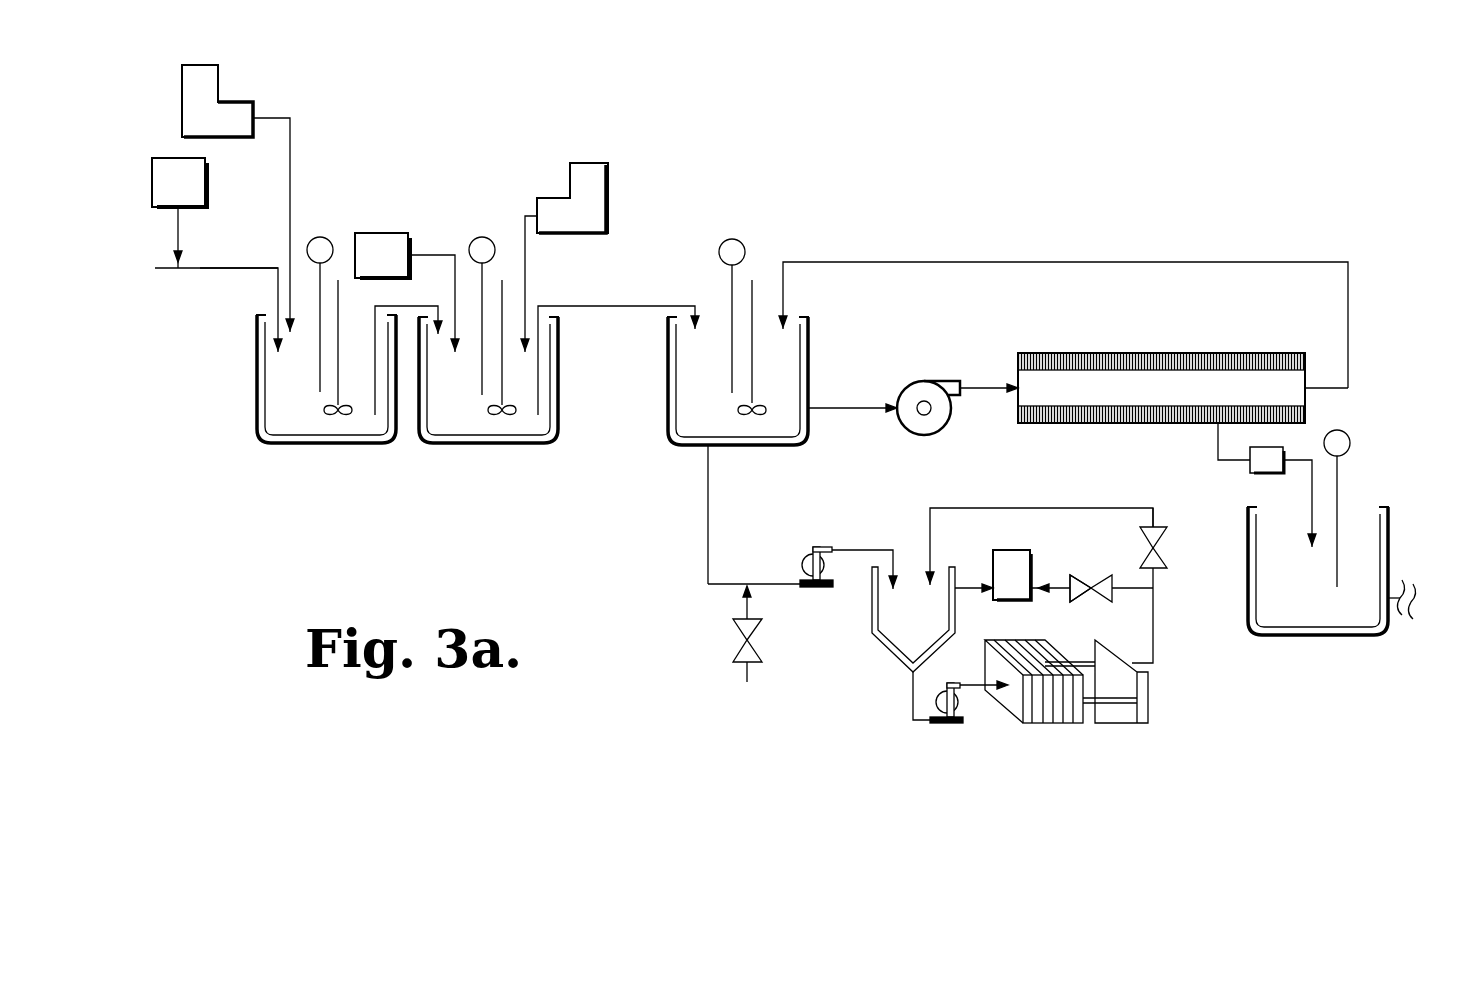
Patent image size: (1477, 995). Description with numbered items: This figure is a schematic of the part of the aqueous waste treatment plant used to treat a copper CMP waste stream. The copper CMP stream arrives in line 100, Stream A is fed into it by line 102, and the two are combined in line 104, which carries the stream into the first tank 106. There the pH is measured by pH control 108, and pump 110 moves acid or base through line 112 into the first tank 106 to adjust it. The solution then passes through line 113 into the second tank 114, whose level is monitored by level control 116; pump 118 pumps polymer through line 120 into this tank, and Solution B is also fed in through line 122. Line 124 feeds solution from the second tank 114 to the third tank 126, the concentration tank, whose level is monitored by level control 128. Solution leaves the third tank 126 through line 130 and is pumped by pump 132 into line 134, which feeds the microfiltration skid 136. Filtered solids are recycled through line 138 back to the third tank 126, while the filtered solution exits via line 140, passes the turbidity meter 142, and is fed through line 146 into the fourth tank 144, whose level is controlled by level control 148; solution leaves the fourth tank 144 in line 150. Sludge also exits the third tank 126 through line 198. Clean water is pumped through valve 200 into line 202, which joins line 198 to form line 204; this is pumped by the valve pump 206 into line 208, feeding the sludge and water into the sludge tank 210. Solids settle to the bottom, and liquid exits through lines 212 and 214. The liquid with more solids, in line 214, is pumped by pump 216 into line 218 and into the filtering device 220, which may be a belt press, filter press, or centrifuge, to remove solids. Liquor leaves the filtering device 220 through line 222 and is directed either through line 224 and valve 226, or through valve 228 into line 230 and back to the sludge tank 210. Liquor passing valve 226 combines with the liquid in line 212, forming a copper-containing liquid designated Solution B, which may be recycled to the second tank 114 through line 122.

The line 100 is at (168, 268).
The line 102 is at (176, 231).
The line 104 is at (225, 268).
The first tank 106 is at (258, 440).
The pH control 108 is at (318, 232).
The pump 110 is at (218, 82).
The line 112 is at (292, 140).
The line 113 is at (386, 306).
The second tank 114 is at (421, 442).
The level control 116 is at (484, 237).
The pump 118 is at (608, 198).
The line 120 is at (527, 275).
The line 122 is at (432, 250).
The line 124 is at (585, 306).
The third tank 126 is at (668, 440).
The level control 128 is at (742, 238).
The line 130 is at (828, 408).
The pump 132 is at (915, 435).
The line 134 is at (985, 388).
The microfiltration skid 136 is at (1120, 353).
The line 138 is at (1035, 262).
The line 140 is at (1218, 452).
The turbidity meter 142 is at (1250, 473).
The fourth tank 144 is at (1335, 635).
The line 146 is at (1312, 498).
The level control 148 is at (1350, 443).
The line 150 is at (1415, 614).
The line 198 is at (708, 520).
The valve 200 is at (757, 653).
The line 202 is at (745, 606).
The line 204 is at (775, 588).
The valve pump 206 is at (818, 547).
The line 208 is at (862, 550).
The sludge tank 210 is at (885, 646).
The line 212 is at (965, 590).
The line 214 is at (913, 720).
The pump 216 is at (948, 723).
The line 218 is at (973, 690).
The filtering device 220 is at (1062, 723).
The line 222 is at (1155, 645).
The line 224 is at (1135, 588).
The valve 226 is at (1090, 575).
The valve 228 is at (1162, 545).
The line 230 is at (988, 508).